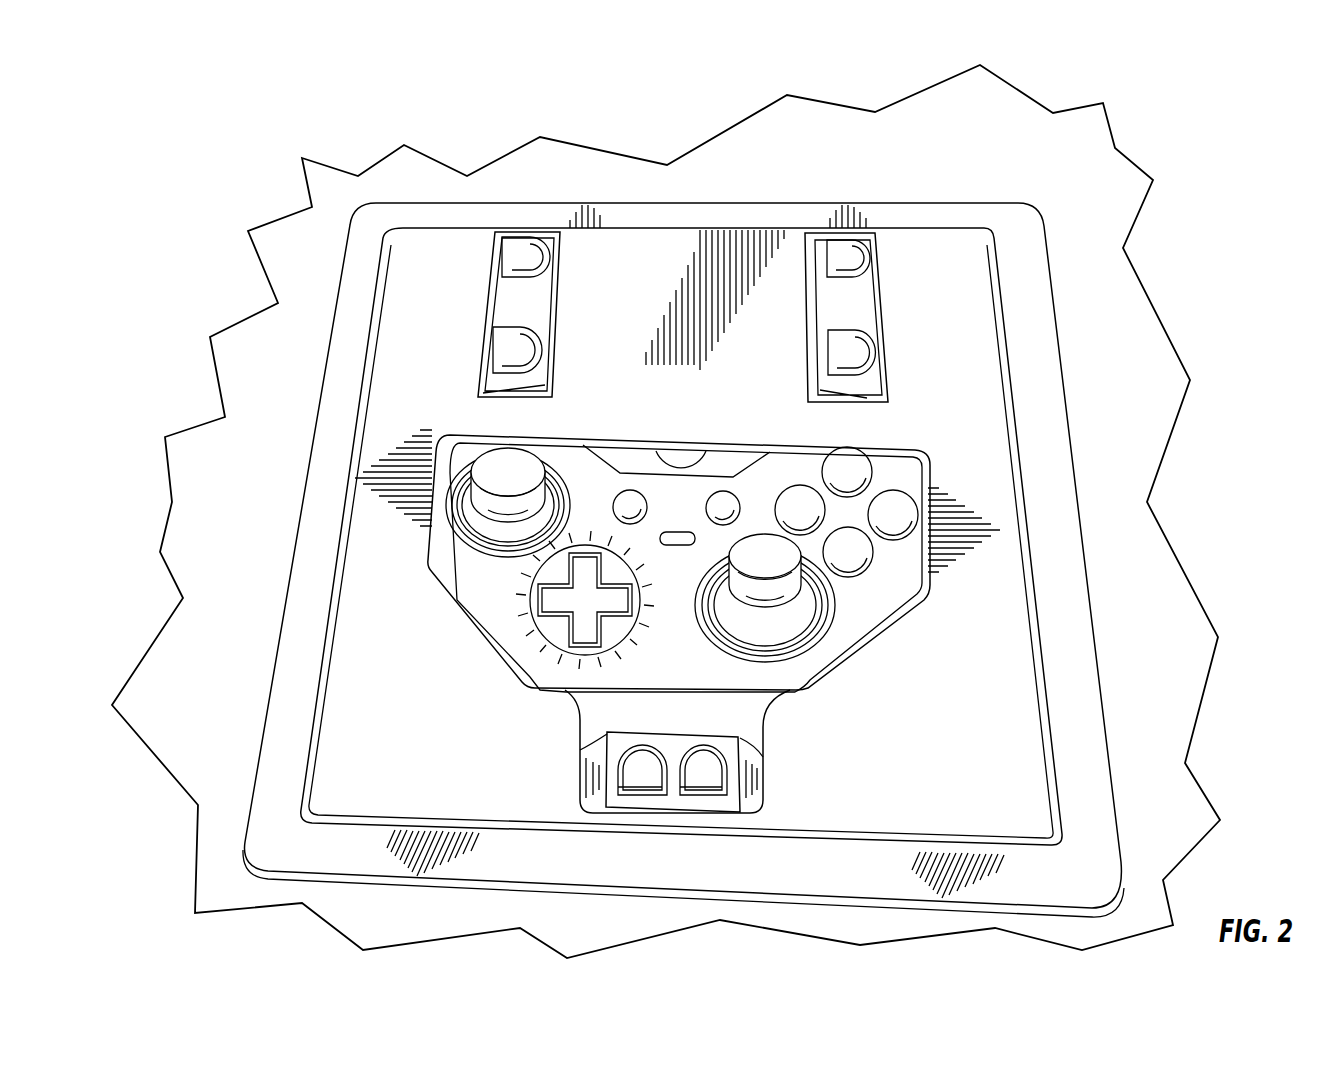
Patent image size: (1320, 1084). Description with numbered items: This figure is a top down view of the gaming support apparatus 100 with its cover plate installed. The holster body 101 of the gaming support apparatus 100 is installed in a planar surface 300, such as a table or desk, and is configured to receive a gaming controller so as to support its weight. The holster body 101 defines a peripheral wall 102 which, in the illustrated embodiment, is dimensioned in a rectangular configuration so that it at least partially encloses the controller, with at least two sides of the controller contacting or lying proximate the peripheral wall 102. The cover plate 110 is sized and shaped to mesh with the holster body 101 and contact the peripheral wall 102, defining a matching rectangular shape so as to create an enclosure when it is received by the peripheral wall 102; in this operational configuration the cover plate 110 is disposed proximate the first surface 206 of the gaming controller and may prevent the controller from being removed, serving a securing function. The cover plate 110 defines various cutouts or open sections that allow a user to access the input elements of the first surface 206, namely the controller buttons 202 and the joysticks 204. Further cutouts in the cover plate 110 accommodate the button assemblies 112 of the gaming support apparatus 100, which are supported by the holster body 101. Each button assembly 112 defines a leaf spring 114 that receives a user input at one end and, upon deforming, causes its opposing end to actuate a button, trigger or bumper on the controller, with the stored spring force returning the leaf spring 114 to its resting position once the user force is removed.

The gaming support apparatus 100 is at (1143, 118).
The holster body 101 is at (1060, 240).
The peripheral wall 102 is at (622, 210).
The cover plate 110 is at (965, 727).
The button assemblies 112 is at (515, 290).
The leaf spring 114 is at (522, 338).
The controller buttons 202 is at (810, 510).
The joysticks 204 is at (753, 570).
The first surface 206 is at (868, 613).
The planar surface 300 is at (233, 557).